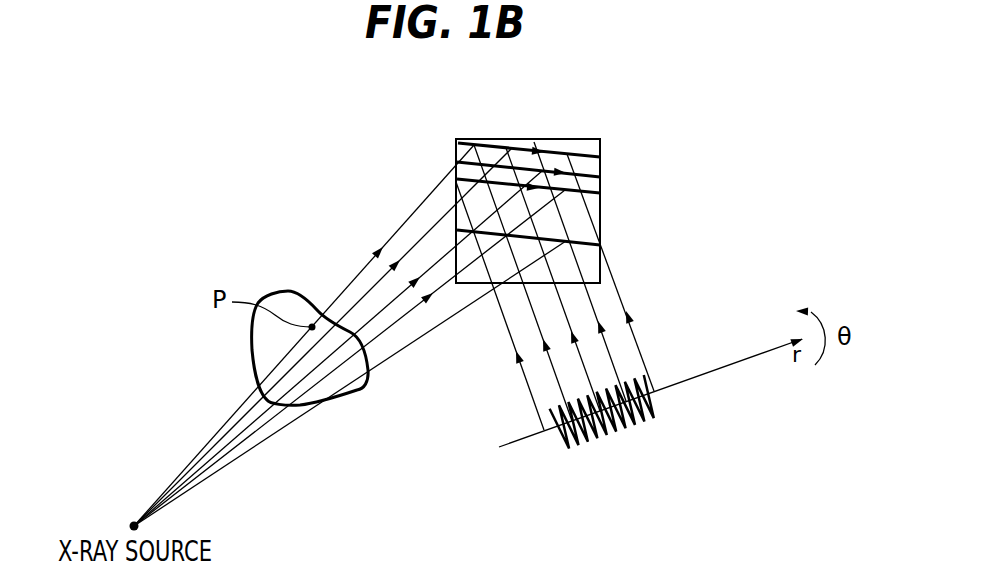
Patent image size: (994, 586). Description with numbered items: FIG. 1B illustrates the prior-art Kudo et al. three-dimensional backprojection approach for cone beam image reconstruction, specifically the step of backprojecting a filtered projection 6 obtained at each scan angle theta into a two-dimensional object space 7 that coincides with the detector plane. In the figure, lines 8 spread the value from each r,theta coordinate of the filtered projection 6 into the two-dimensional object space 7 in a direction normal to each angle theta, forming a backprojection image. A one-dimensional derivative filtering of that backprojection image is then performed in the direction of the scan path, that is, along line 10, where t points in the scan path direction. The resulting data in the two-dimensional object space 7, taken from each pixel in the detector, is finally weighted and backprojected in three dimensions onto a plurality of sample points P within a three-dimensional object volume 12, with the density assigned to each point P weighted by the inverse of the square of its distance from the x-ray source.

The filtered projection 6 is at (631, 374).
The 2D object space 7 is at (585, 139).
The lines 8 is at (619, 293).
The line 10 is at (591, 157).
The 3D object volume 12 is at (288, 291).